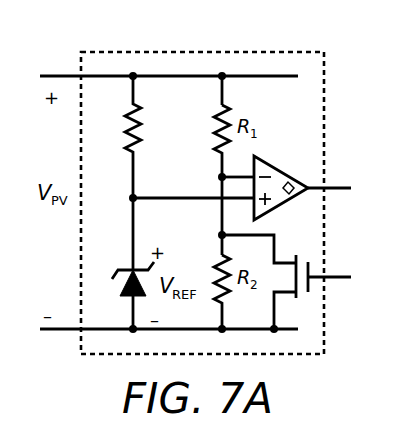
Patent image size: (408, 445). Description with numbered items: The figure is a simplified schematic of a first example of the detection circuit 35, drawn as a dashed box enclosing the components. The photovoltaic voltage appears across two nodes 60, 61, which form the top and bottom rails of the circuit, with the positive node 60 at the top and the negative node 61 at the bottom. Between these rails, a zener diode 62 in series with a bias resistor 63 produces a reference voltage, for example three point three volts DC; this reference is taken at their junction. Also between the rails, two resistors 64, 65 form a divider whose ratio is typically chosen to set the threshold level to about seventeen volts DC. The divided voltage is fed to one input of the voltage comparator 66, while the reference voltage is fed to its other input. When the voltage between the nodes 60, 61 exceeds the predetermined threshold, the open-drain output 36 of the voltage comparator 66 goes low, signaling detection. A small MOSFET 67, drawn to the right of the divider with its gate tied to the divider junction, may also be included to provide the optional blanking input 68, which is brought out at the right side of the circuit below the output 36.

The detection circuit 35 is at (325, 90).
The open-drain output 36 is at (340, 186).
The node 60 is at (58, 73).
The node 61 is at (58, 331).
The zener diode 62 is at (122, 268).
The bias resistor 63 is at (143, 134).
The resistor 64 is at (210, 140).
The resistor 65 is at (212, 258).
The voltage comparator 66 is at (291, 175).
The MOSFET 67 is at (297, 253).
The blanking input 68 is at (340, 275).